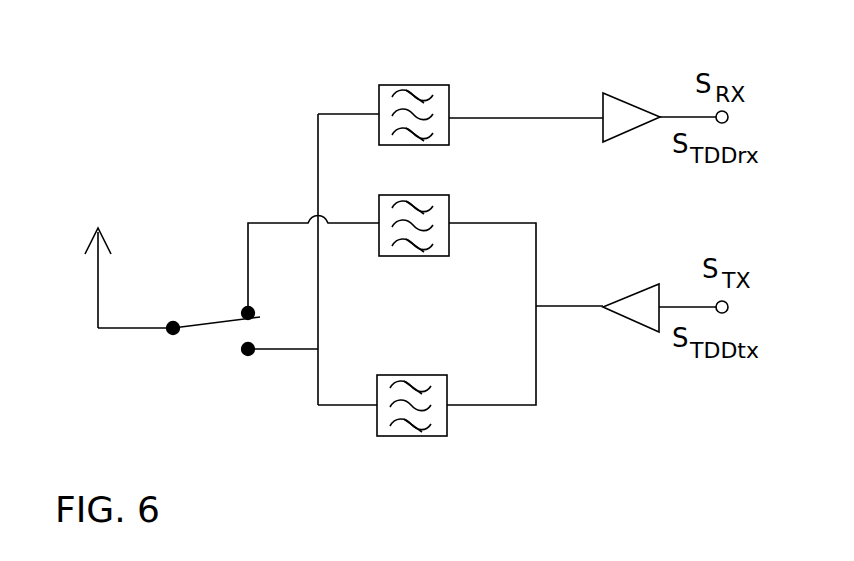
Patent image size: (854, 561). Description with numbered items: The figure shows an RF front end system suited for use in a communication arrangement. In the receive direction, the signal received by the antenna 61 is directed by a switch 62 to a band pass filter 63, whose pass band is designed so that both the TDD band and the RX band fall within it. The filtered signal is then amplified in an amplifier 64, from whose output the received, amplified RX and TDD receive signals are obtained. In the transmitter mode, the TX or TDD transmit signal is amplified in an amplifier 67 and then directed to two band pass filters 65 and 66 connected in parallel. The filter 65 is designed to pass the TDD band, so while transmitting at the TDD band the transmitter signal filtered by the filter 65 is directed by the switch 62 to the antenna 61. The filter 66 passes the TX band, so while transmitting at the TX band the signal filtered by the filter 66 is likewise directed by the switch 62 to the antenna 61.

The antenna 61 is at (113, 242).
The switch 62 is at (213, 315).
The band pass filter 63 is at (413, 85).
The amplifier 64 is at (632, 97).
The band pass filter 65 is at (418, 262).
The band pass filter 66 is at (412, 375).
The amplifier 67 is at (638, 288).